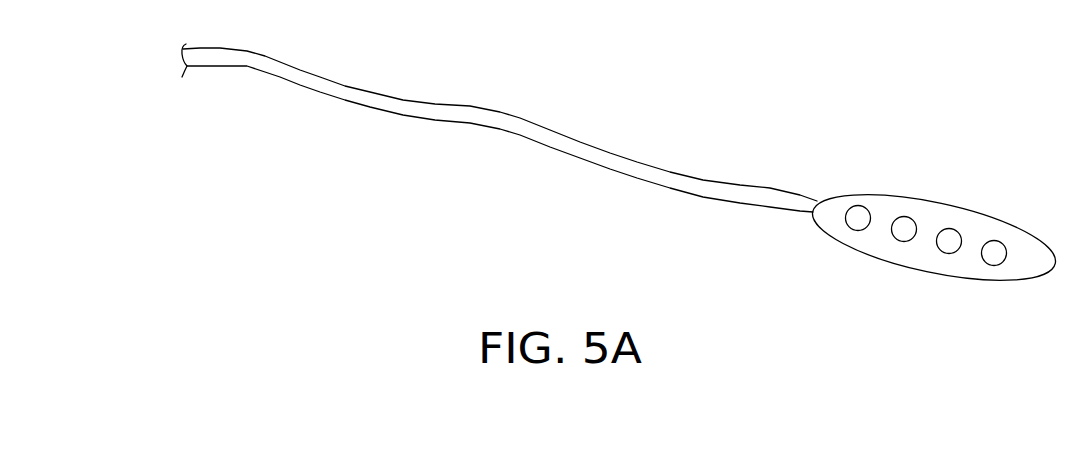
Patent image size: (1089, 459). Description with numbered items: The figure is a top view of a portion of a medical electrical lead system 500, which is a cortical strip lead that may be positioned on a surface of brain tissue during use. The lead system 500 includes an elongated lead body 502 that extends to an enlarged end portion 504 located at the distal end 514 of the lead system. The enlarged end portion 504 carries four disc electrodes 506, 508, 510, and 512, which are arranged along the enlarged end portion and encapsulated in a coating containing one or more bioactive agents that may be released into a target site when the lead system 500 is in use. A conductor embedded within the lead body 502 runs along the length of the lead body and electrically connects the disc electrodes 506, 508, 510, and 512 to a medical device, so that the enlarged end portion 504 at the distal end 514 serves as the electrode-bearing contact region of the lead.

The lead system 500 is at (715, 131).
The lead body 502 is at (622, 172).
The enlarged end portion 504 is at (958, 275).
The disc electrode 506 is at (856, 207).
The disc electrode 508 is at (912, 220).
The disc electrode 510 is at (950, 229).
The disc electrode 512 is at (1002, 244).
The distal end 514 is at (853, 255).